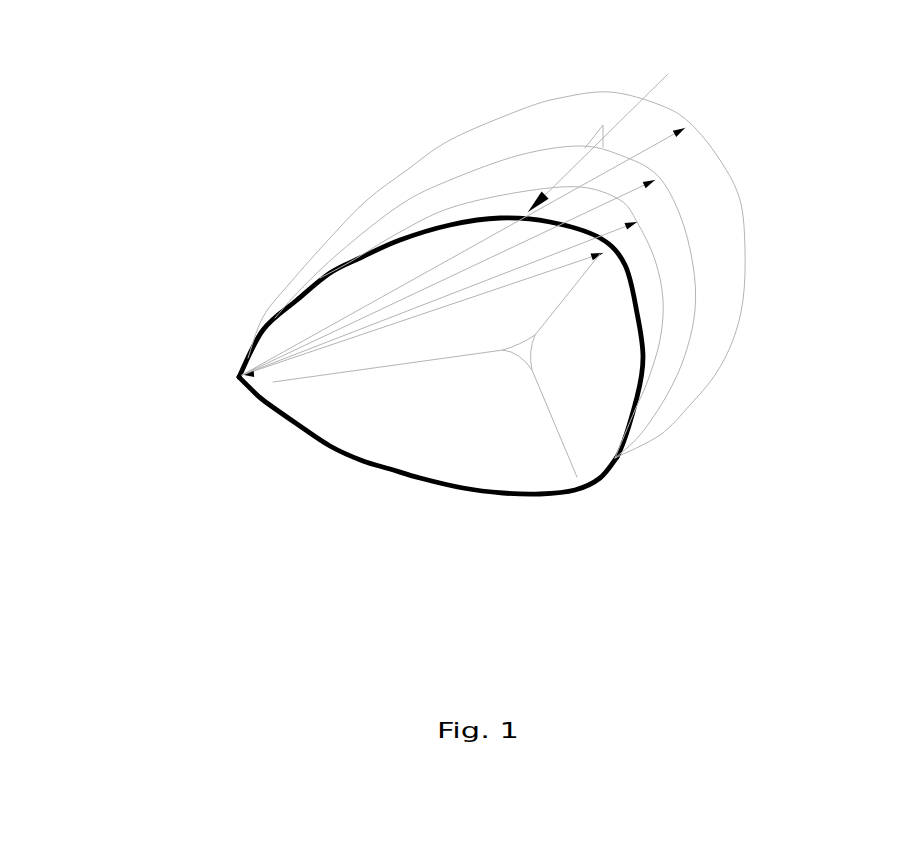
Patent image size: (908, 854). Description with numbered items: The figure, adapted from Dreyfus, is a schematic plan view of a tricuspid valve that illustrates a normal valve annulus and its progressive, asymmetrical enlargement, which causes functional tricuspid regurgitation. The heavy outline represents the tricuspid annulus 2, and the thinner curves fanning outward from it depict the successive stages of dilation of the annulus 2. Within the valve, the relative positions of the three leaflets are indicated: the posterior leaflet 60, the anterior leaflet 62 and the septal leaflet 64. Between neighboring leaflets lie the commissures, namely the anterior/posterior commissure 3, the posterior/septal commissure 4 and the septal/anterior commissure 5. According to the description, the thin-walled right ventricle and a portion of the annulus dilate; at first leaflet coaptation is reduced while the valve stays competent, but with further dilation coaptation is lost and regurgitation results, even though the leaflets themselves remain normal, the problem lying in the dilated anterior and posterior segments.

The tricuspid annulus 2 is at (604, 131).
The anterior/posterior (A/P) commissure 3 is at (612, 256).
The posterior/septal (P/S) commissure 4 is at (578, 476).
The septal/anterior (S/A) commissure 5 is at (237, 387).
The posterior leaflet 60 is at (602, 375).
The anterior leaflet 62 is at (337, 297).
The septal leaflet 64 is at (407, 450).